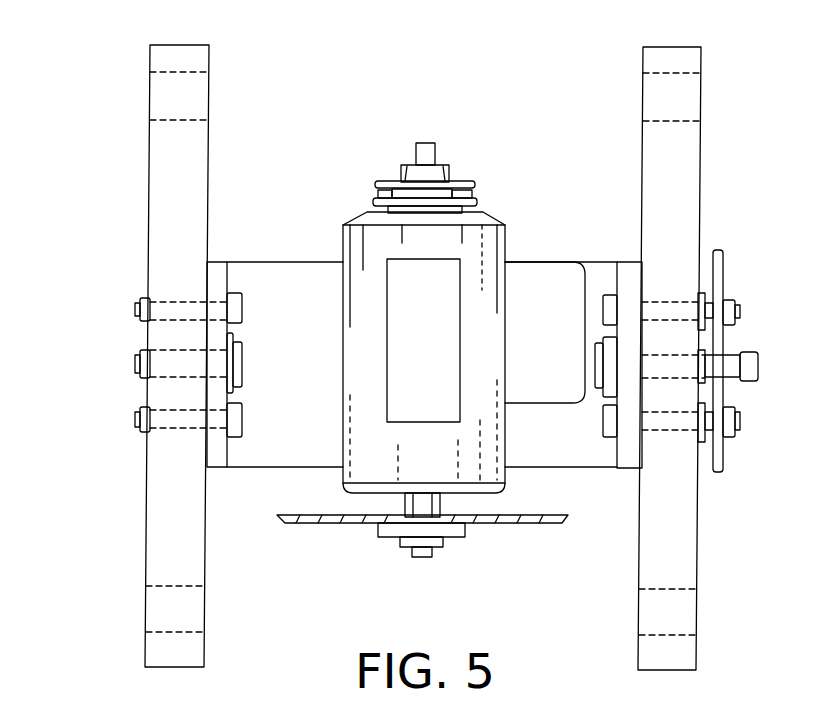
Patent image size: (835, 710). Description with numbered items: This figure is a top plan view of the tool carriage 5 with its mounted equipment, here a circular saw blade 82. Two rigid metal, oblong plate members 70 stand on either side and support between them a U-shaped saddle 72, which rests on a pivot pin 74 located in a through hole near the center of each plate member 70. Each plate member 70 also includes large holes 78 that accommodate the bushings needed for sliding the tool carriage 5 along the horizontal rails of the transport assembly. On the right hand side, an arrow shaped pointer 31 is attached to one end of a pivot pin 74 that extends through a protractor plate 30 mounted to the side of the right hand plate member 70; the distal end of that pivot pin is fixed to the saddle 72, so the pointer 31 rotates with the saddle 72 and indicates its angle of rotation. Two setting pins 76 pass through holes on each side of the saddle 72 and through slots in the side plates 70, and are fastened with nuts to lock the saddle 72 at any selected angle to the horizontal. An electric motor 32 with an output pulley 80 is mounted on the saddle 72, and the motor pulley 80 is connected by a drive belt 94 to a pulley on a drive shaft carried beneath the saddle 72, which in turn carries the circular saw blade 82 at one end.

The tool carriage 5 is at (96, 181).
The protractor plate 30 is at (718, 250).
The arrow shaped pointer 31 is at (758, 366).
The electric motor 32 is at (445, 251).
The plate members 70 is at (148, 515).
The saddle 72 is at (302, 336).
The pivot pin 74 is at (137, 365).
The setting pins 76 is at (137, 308).
The large holes 78 is at (163, 95).
The output pulley 80 is at (378, 190).
The circular saw blade 82 is at (333, 523).
The drive belt 94 is at (478, 195).